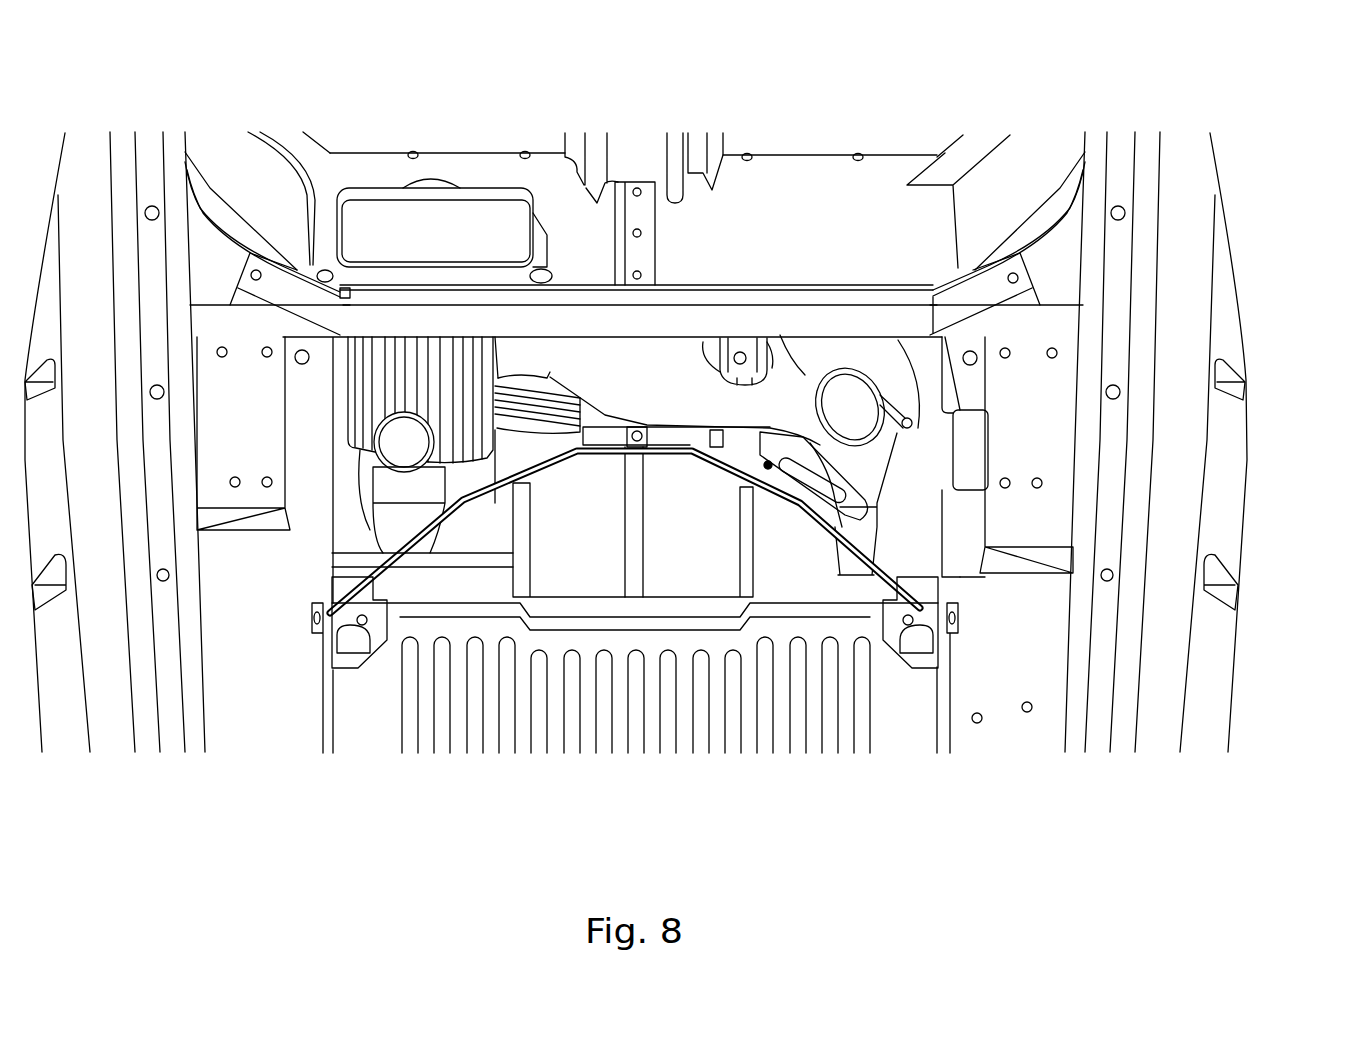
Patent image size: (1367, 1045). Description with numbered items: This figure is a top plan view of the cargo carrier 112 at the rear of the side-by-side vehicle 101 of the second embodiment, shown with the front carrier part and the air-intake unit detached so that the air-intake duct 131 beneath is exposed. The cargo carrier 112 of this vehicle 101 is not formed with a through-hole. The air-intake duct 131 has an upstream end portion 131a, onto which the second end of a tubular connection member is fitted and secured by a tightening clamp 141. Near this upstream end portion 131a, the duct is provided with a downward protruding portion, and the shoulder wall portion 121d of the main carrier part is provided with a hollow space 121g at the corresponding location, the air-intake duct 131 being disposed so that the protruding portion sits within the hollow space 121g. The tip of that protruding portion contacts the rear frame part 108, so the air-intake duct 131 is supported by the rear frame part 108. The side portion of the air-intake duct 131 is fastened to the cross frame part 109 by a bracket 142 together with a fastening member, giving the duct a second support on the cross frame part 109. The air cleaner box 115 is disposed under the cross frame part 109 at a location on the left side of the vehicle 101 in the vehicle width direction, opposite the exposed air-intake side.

The vehicle 101 is at (1184, 56).
The rear frame part 108 is at (972, 452).
The cross frame part 109 is at (593, 320).
The cargo carrier 112 is at (653, 740).
The air cleaner box 115 is at (392, 353).
The shoulder wall portion 121d is at (1013, 658).
The hollow space 121g is at (952, 350).
The air-intake duct 131 is at (792, 377).
The upstream end portion 131a is at (852, 377).
The tightening clamp 141 is at (825, 377).
The bracket 142 is at (705, 334).